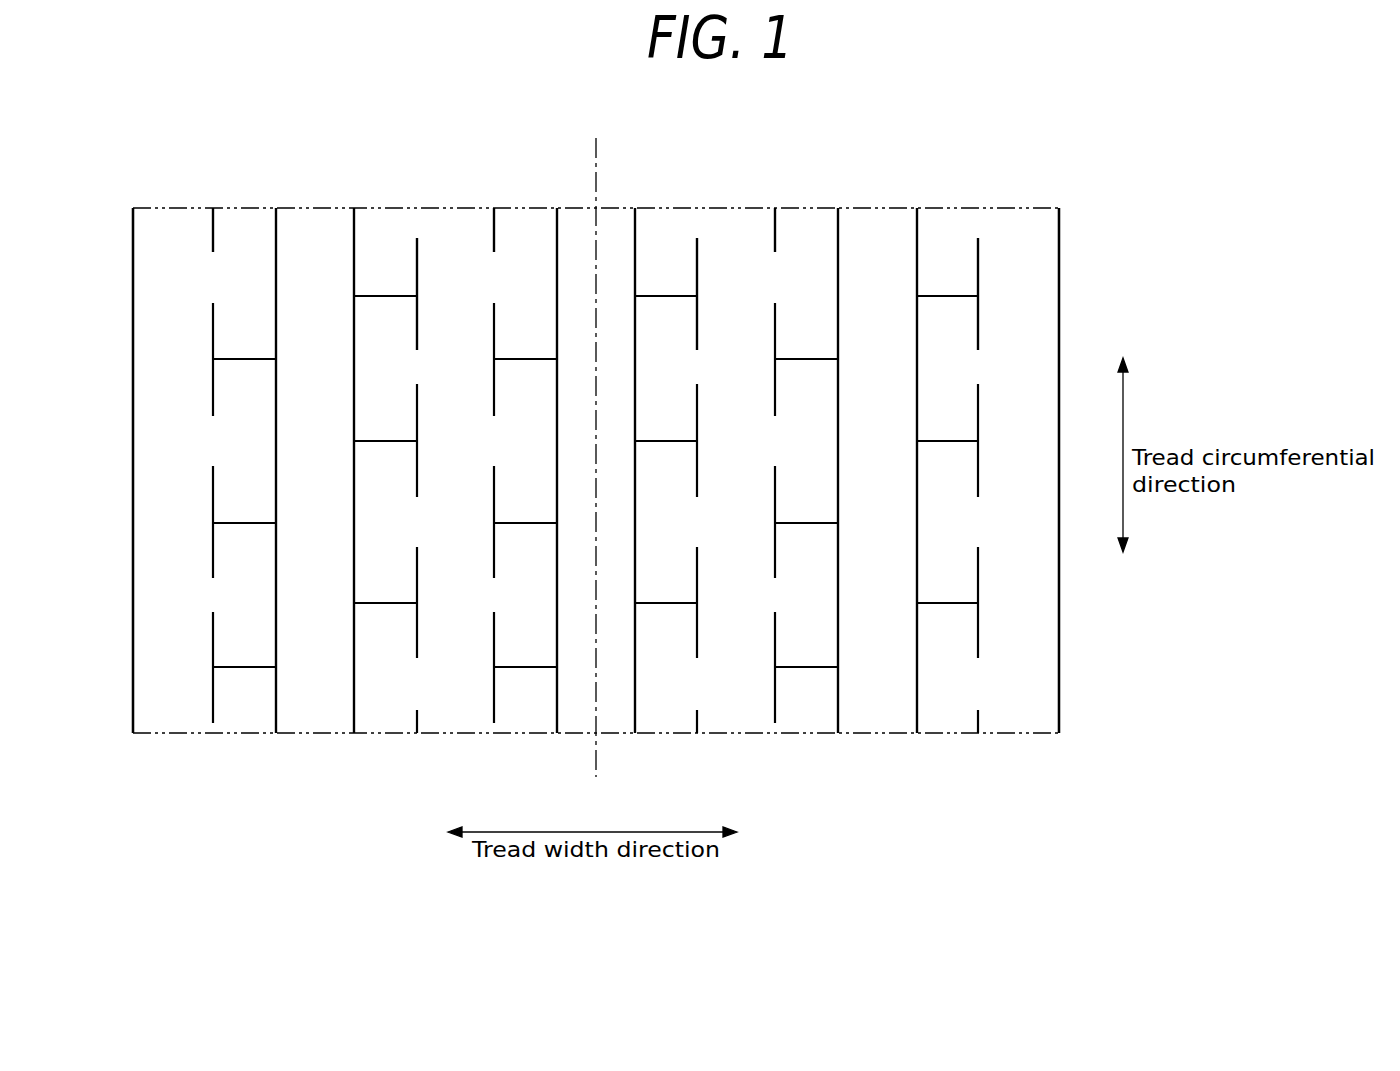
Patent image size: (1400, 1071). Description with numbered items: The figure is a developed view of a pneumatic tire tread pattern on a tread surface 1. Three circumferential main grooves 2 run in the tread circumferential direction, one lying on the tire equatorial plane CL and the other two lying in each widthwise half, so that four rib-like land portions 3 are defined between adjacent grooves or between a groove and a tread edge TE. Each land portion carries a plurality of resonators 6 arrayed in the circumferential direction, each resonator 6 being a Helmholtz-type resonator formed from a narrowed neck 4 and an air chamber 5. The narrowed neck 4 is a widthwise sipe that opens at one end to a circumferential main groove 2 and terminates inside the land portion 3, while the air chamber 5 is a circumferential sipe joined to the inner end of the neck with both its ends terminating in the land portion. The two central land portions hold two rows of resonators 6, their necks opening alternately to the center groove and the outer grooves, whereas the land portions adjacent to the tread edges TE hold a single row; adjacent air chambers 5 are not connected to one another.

The tread surface 1 is at (883, 154).
The circumferential main groove 2 is at (317, 697).
The rib-like land portion 3 is at (173, 697).
The narrowed neck 4 is at (247, 357).
The air chamber 5 is at (212, 322).
The resonator 6 is at (179, 165).
The tire equatorial plane CL is at (596, 444).
The tread edge TE is at (133, 252).